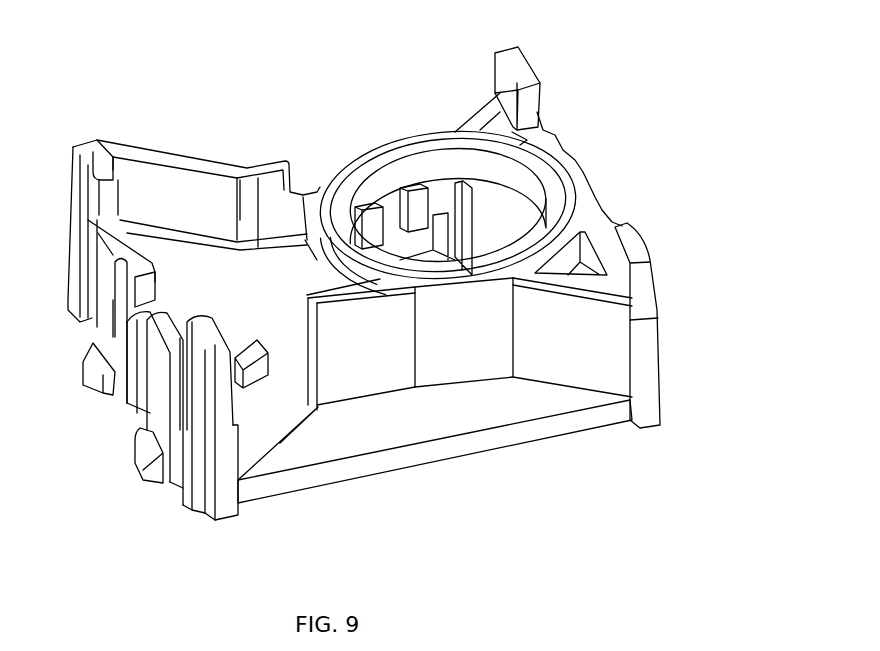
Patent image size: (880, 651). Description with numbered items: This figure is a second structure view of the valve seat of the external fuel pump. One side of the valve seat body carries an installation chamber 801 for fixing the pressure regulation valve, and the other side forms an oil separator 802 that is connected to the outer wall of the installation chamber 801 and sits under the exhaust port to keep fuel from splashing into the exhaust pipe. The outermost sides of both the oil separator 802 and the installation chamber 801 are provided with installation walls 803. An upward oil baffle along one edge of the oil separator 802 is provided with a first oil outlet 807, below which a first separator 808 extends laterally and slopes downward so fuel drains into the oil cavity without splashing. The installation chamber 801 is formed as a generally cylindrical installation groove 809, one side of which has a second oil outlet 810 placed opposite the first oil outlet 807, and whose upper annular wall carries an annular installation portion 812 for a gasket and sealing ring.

The installation chamber 801 is at (487, 312).
The oil separator 802 is at (223, 287).
The installation walls 803 is at (658, 318).
The first oil outlet 807 is at (290, 355).
The first separator 808 is at (412, 438).
The installation groove 809 is at (478, 240).
The second oil outlet 810 is at (418, 247).
The annular installation portion 812 is at (537, 185).